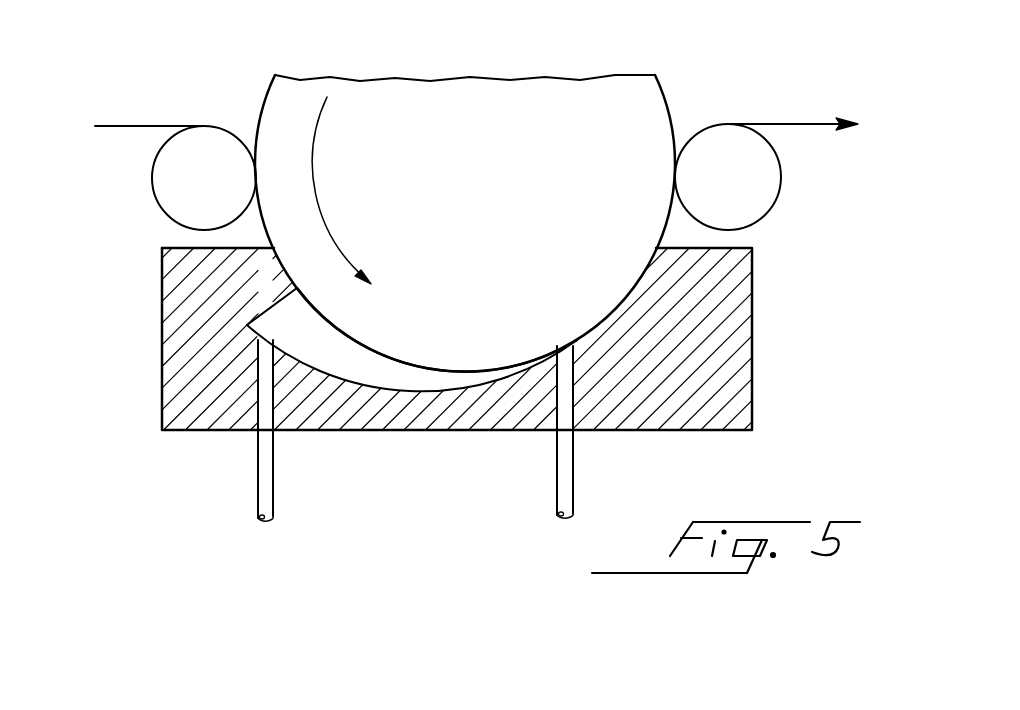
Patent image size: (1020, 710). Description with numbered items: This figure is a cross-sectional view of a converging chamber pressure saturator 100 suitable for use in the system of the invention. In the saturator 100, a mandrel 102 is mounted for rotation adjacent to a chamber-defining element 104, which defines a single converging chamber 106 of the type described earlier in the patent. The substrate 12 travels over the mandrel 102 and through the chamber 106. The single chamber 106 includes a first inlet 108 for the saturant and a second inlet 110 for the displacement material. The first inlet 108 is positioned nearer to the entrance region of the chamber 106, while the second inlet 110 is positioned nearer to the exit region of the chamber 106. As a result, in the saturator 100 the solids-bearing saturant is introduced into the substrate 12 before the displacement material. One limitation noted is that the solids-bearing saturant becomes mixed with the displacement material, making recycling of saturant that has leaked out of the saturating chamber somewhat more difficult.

The substrate 12 is at (790, 124).
The converging chamber pressure saturator 100 is at (130, 236).
The mandrel 102 is at (377, 100).
The chamber-defining element 104 is at (755, 325).
The single converging chamber 106 is at (378, 367).
The first inlet 108 is at (273, 495).
The second inlet 110 is at (573, 467).